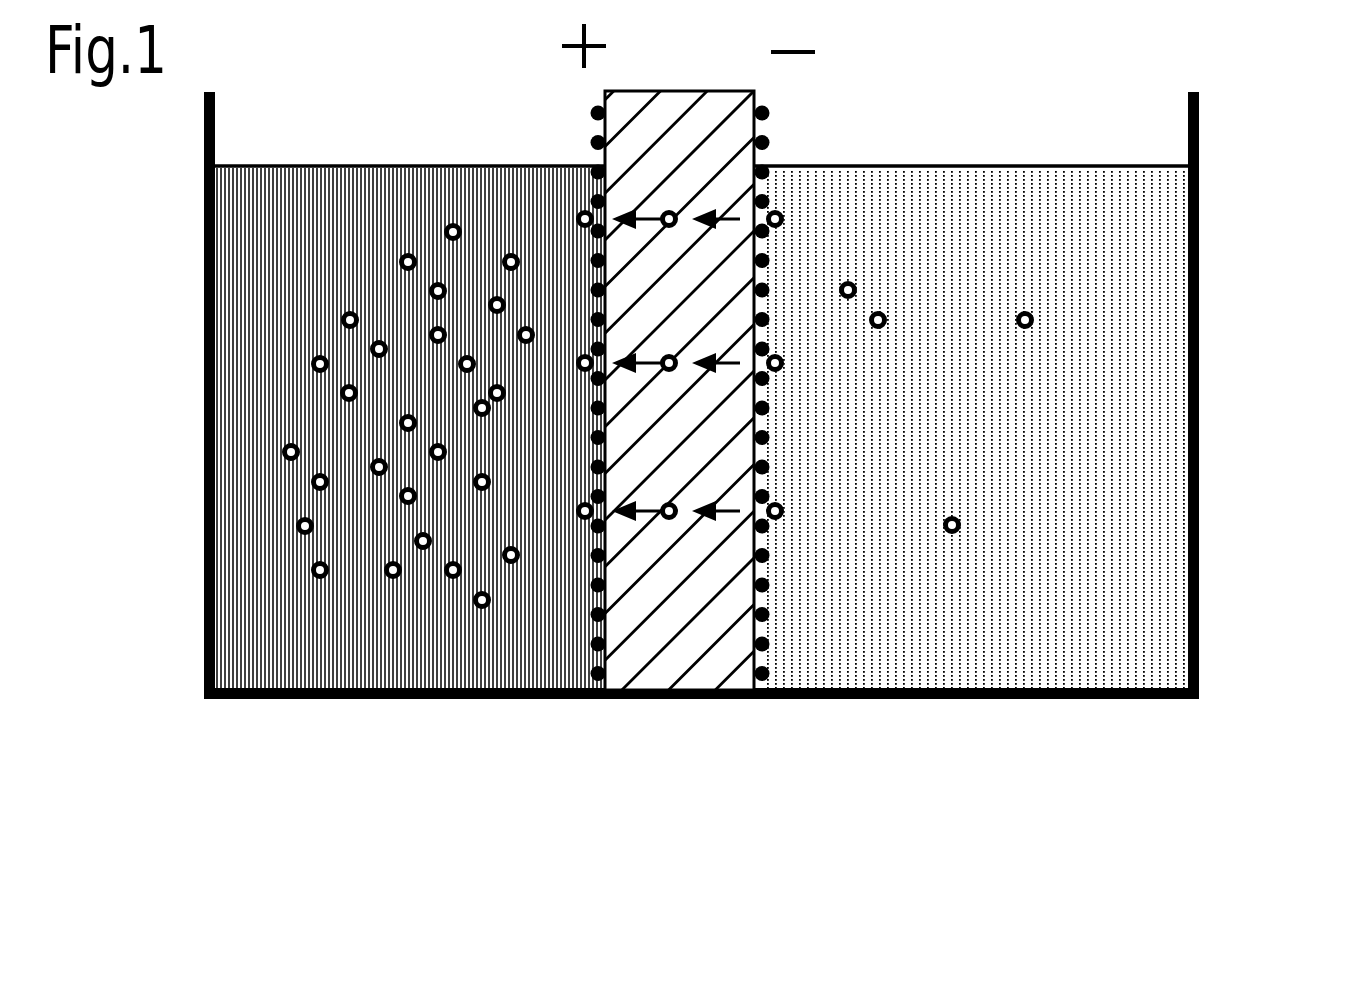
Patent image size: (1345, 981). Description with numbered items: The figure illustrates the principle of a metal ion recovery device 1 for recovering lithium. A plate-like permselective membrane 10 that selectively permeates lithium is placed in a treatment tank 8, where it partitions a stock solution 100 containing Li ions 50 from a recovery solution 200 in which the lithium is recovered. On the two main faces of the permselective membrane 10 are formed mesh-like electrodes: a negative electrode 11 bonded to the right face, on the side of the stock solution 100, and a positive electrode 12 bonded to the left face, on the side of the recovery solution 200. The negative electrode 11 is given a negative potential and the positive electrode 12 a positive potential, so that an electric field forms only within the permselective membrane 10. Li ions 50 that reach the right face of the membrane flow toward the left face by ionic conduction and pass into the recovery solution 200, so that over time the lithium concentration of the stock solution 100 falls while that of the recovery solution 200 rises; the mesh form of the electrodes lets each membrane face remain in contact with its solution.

The metal ion recovery device 1 is at (72, 693).
The treatment tank 8 is at (1199, 543).
The permselective membrane 10 is at (680, 658).
The negative electrode 11 is at (758, 683).
The positive electrode 12 is at (595, 693).
The Li ion 50 is at (405, 253).
The stock solution 100 is at (1083, 618).
The recovery solution 200 is at (343, 650).